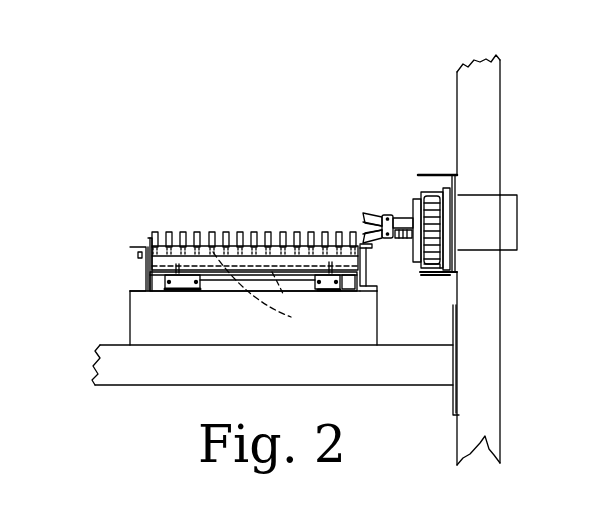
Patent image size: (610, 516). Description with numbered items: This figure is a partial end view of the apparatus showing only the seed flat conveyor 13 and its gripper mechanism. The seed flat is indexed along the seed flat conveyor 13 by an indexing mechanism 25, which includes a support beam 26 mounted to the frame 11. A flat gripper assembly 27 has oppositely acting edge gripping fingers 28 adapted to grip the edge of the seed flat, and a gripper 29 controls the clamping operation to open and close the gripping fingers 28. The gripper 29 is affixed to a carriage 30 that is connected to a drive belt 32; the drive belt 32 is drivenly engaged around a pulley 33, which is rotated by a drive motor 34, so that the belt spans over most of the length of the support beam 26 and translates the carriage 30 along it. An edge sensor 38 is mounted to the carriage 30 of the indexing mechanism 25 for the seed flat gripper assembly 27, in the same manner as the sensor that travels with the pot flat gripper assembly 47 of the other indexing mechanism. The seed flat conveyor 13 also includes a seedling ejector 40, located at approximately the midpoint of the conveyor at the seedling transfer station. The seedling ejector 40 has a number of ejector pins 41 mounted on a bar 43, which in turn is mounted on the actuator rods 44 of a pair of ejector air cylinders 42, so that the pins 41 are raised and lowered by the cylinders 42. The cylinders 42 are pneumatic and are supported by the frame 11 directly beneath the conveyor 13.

The frame 11 is at (500, 107).
The seed flat conveyor 13 is at (132, 260).
The indexing mechanism 25 is at (426, 283).
The support beam 26 is at (458, 183).
The flat gripper assembly 27 is at (387, 212).
The edge gripping fingers 28 is at (370, 213).
The gripper 29 is at (400, 246).
The carriage 30 is at (416, 202).
The drive belt 32 is at (441, 267).
The pulley 33 is at (445, 207).
The drive motor 34 is at (511, 236).
The edge sensor 38 is at (365, 227).
The seedling ejector 40 is at (330, 292).
The ejector pins 41 is at (170, 232).
The ejector air cylinders 42 is at (297, 265).
The bar 43 is at (262, 290).
The actuator rods 44 is at (330, 272).
The pot flat gripper assembly 47 is at (494, 510).